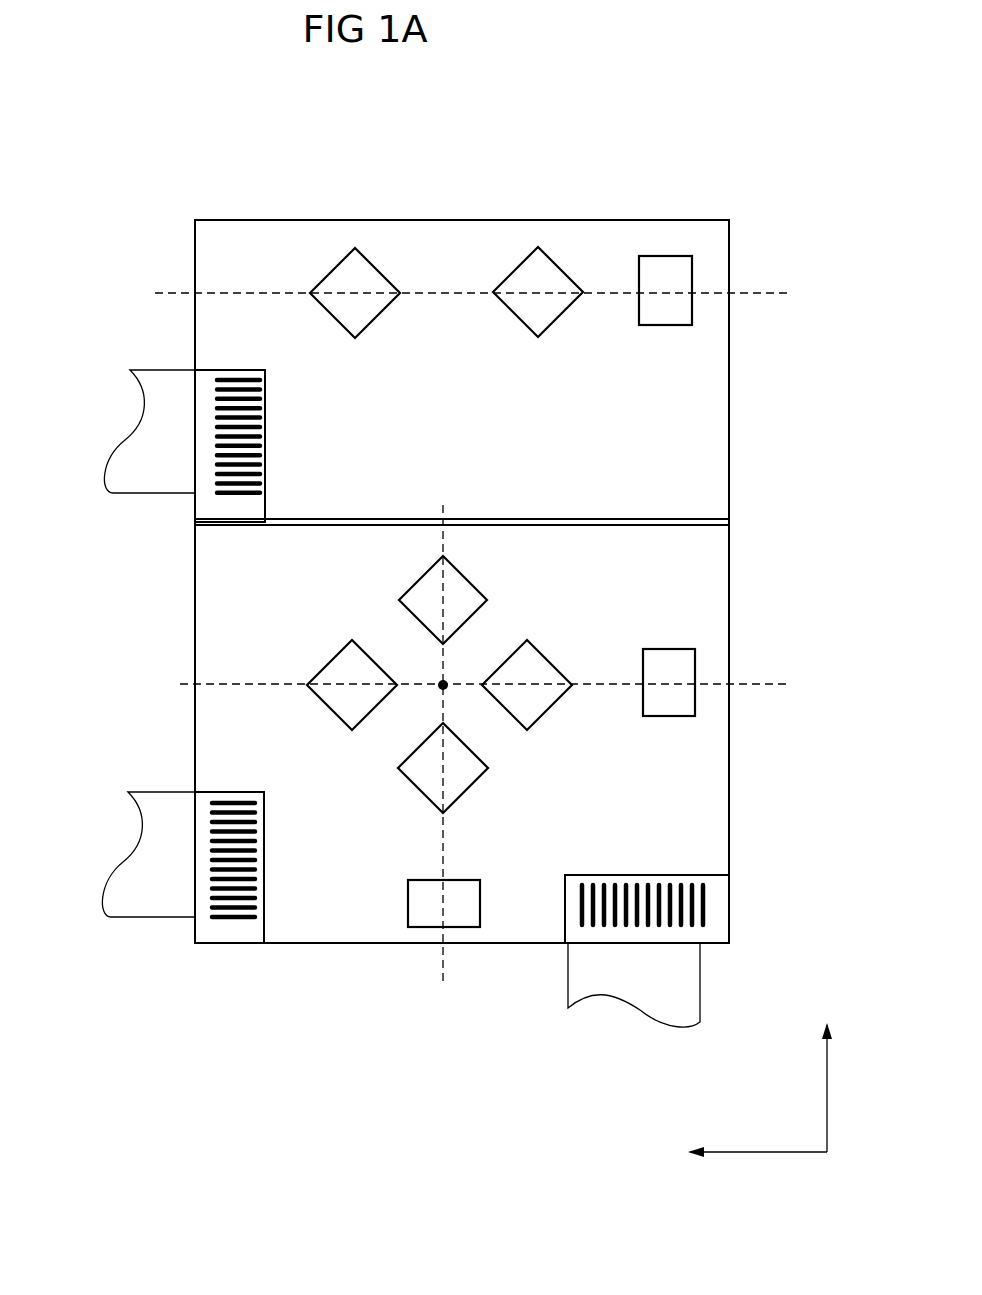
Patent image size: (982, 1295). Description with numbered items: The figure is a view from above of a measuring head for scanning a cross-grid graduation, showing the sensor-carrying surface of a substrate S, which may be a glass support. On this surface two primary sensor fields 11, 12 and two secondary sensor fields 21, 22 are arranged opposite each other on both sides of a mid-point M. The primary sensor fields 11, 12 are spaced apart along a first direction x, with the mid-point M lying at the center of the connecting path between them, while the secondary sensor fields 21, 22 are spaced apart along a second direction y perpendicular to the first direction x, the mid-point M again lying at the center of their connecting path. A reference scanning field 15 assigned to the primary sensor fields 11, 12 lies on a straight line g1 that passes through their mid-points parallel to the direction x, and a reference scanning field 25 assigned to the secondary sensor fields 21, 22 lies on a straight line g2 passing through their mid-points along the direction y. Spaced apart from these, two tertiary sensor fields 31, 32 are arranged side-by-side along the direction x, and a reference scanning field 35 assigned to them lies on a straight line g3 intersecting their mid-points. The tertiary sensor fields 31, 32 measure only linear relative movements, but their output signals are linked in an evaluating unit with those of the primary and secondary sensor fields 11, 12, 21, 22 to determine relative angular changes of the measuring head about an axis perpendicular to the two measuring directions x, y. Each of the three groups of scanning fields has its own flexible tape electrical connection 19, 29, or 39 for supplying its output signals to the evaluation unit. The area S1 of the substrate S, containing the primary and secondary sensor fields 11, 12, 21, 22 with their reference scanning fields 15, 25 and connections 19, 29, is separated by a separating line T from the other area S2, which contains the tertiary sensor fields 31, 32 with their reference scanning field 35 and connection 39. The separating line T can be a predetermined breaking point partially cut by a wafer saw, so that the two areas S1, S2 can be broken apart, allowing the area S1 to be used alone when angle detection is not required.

The primary sensor field 11 is at (330, 682).
The primary sensor field 12 is at (535, 672).
The reference scanning field 15 is at (682, 683).
The electrical connection 19 is at (657, 993).
The secondary sensor field 21 is at (432, 593).
The secondary sensor field 22 is at (447, 770).
The reference scanning field 25 is at (432, 908).
The electrical connection 29 is at (150, 877).
The tertiary sensor field 31 is at (353, 290).
The tertiary sensor field 32 is at (537, 290).
The reference scanning field 35 is at (674, 290).
The electrical connection 39 is at (152, 455).
The substrate S is at (746, 417).
The area of the substrate S1 is at (200, 752).
The area of the substrate S2 is at (210, 260).
The separating line T is at (690, 517).
The mid-point M is at (445, 687).
The straight line g1 is at (502, 685).
The straight line g2 is at (445, 760).
The straight line g3 is at (492, 295).
The first direction x is at (743, 1153).
The second direction y is at (828, 1071).